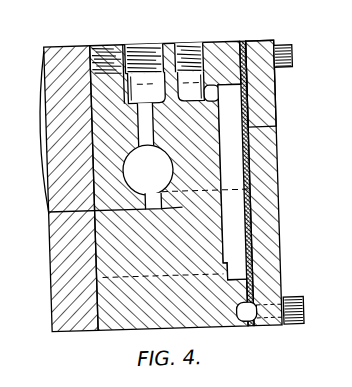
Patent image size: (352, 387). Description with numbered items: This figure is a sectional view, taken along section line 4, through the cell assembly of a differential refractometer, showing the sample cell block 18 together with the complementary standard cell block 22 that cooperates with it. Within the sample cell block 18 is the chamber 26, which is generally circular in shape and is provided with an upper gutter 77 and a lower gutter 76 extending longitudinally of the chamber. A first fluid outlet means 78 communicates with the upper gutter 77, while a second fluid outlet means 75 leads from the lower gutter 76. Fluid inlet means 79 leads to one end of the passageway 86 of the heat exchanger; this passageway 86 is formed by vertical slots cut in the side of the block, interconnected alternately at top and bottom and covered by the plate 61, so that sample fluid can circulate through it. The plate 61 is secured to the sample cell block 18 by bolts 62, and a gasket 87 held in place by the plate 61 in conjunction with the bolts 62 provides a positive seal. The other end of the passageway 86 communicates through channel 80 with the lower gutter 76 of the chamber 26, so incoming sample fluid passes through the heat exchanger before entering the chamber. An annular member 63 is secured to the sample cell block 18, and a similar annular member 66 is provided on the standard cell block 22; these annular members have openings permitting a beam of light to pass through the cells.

The section line 4 is at (4, 279).
The sample cell block 18 is at (116, 328).
The standard cell block 22 is at (51, 311).
The chamber 26 is at (158, 178).
The plate 61 is at (277, 256).
The bolts 62 is at (299, 56).
The annular member 63 is at (41, 170).
The annular member 66 is at (346, 180).
The second fluid outlet means 75 is at (104, 44).
The lower gutter 76 is at (50, 212).
The upper gutter 77 is at (140, 135).
The first fluid outlet means 78 is at (142, 45).
The fluid inlet means 79 is at (198, 43).
The channel 80 is at (206, 183).
The passageway 86 is at (281, 122).
The gasket 87 is at (254, 174).